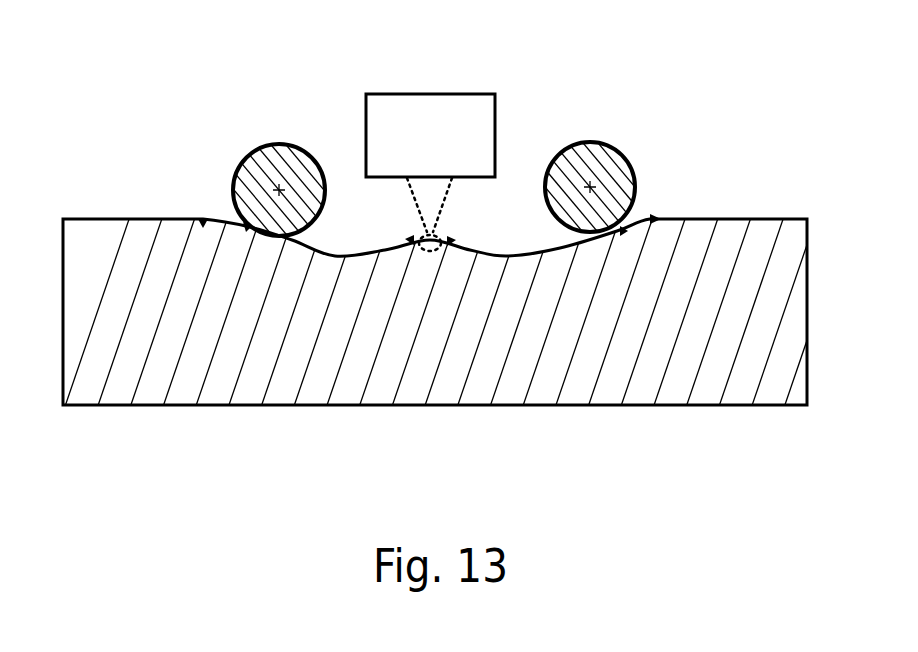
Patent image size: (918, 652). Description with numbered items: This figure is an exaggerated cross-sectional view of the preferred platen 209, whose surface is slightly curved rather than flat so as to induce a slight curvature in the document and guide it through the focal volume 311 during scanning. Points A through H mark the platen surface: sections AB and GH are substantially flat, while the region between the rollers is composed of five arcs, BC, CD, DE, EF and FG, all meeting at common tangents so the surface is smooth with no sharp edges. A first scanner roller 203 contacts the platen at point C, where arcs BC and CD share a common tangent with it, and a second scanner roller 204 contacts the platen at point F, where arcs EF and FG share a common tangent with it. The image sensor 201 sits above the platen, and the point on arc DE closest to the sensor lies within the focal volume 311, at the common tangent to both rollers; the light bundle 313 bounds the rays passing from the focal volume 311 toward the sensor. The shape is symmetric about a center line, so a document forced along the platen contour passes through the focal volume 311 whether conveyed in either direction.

The image sensor 201 is at (450, 93).
The first scanner roller 203 is at (601, 145).
The second scanner roller 204 is at (236, 176).
The platen 209 is at (718, 226).
The focal volume 311 is at (448, 213).
The light bundle 313 is at (408, 214).